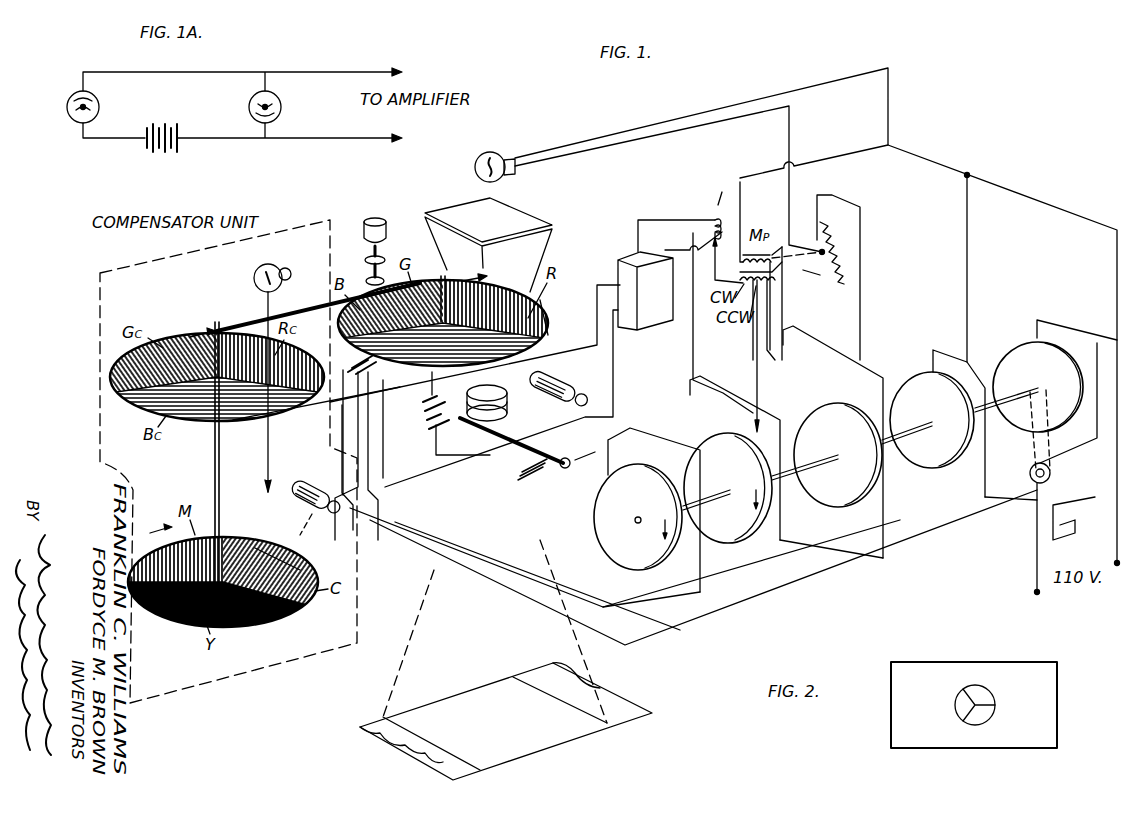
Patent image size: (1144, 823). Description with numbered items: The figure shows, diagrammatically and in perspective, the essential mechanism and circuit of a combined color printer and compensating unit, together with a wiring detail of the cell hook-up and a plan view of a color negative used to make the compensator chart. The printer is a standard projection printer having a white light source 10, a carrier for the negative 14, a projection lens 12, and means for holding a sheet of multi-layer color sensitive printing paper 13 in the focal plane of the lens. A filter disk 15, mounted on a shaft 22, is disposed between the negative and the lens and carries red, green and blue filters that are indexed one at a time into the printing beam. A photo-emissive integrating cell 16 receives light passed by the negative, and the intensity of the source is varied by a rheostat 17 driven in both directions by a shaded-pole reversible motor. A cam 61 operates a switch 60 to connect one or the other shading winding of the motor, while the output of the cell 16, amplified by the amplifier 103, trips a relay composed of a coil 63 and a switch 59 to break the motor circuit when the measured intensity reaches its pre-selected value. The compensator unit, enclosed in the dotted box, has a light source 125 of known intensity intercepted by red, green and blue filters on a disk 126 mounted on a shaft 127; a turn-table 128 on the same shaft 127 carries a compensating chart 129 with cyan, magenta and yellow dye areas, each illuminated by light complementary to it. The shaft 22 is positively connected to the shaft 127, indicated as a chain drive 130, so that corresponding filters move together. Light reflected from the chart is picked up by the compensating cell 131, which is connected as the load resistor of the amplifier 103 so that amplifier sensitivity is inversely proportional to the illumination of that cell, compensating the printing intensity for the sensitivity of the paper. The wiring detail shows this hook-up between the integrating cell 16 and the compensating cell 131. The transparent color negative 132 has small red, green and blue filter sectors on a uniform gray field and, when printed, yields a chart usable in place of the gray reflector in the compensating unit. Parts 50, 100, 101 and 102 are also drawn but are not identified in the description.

In FIG. 1, the white light source 10 is at (486, 153).
In FIG. 1, the projection lens 12 is at (512, 386).
In FIG. 1, the multi-layer color sensitive printing paper 13 is at (555, 735).
In FIG. 1, the negative 14 is at (518, 212).
In FIG. 1, the filter disk 15 is at (548, 327).
In FIG. 1A, the light-sensitive cell 16 is at (67, 108).
In FIG. 1, the light-sensitive cell 16 is at (560, 375).
In FIG. 1, the rheostat 17 is at (838, 288).
In FIG. 1, the shaft 22 is at (442, 275).
In FIG. 1, the arm 50 is at (520, 428).
In FIG. 1, the switch 59 is at (693, 241).
In FIG. 1, the switch 60 is at (742, 420).
In FIG. 1, the cam 61 is at (730, 535).
In FIG. 1, the coil 63 is at (713, 206).
In FIG. 1, the screw 100 is at (362, 370).
In FIG. 1, the disc sector 101 is at (548, 304).
In FIG. 1A, the battery 102 is at (163, 152).
In FIG. 1, the battery 102 is at (422, 430).
In FIG. 1, the amplifier 103 is at (648, 330).
In FIG. 1, the light source 125 is at (254, 278).
In FIG. 1, the disk 126 is at (112, 372).
In FIG. 1, the shaft 127 is at (214, 466).
In FIG. 1, the turn-table 128 is at (285, 618).
In FIG. 1, the compensating chart 129 is at (303, 560).
In FIG. 1, the chain drive 130 is at (250, 323).
In FIG. 1A, the compensating cell 131 is at (282, 108).
In FIG. 1, the compensating cell 131 is at (306, 483).
In FIG. 2, the transparent color chart or negative 132 is at (963, 662).